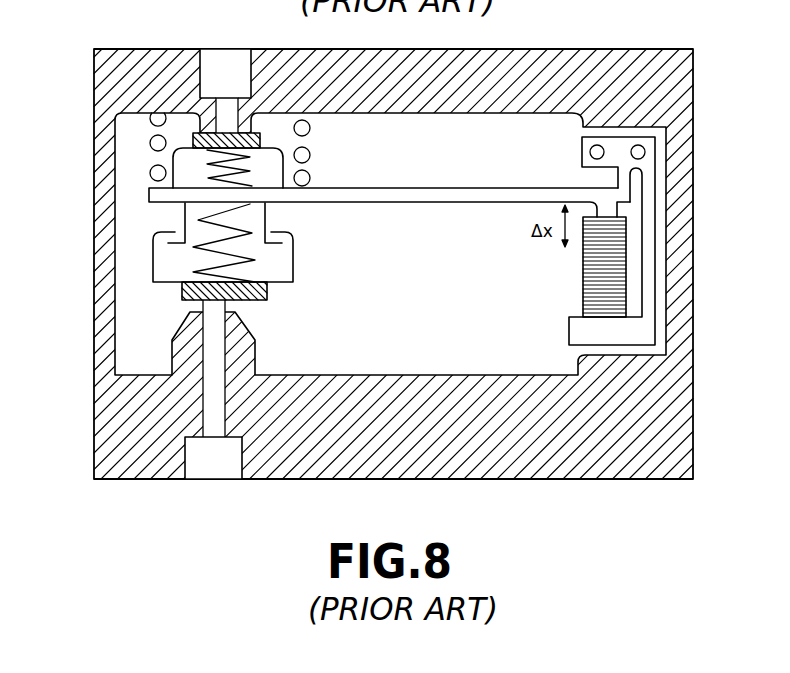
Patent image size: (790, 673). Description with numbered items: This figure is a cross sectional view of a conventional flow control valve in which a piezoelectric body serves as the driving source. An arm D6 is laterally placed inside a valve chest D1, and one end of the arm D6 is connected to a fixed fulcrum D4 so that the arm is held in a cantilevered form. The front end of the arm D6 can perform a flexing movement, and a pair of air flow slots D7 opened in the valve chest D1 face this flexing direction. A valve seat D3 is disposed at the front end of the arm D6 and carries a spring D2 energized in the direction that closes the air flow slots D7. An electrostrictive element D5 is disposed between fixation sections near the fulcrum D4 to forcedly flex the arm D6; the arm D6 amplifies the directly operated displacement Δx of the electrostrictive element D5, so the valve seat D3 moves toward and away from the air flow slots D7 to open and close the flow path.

The valve chest D1 is at (110, 323).
The spring D2 is at (300, 153).
The valve seat D3 is at (262, 141).
The fixed fulcrum D4 is at (647, 182).
The electrostrictive element D5 is at (583, 283).
The arm D6 is at (498, 202).
The air flow slots D7 is at (225, 98).